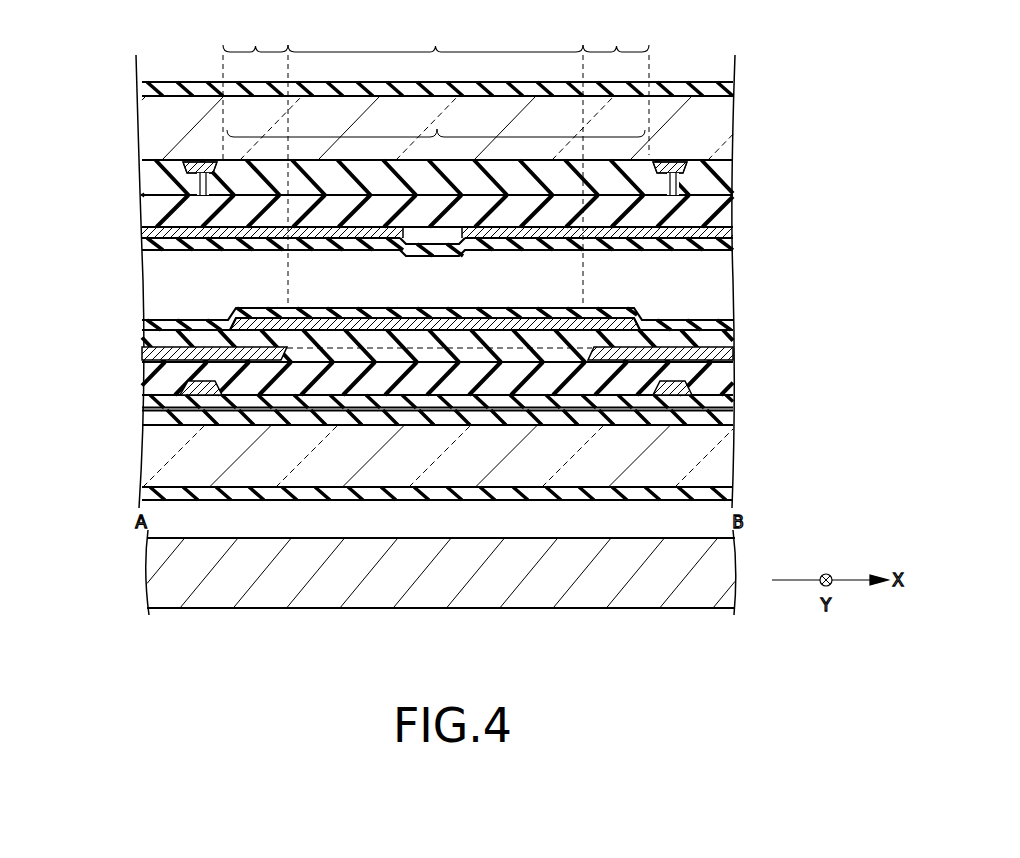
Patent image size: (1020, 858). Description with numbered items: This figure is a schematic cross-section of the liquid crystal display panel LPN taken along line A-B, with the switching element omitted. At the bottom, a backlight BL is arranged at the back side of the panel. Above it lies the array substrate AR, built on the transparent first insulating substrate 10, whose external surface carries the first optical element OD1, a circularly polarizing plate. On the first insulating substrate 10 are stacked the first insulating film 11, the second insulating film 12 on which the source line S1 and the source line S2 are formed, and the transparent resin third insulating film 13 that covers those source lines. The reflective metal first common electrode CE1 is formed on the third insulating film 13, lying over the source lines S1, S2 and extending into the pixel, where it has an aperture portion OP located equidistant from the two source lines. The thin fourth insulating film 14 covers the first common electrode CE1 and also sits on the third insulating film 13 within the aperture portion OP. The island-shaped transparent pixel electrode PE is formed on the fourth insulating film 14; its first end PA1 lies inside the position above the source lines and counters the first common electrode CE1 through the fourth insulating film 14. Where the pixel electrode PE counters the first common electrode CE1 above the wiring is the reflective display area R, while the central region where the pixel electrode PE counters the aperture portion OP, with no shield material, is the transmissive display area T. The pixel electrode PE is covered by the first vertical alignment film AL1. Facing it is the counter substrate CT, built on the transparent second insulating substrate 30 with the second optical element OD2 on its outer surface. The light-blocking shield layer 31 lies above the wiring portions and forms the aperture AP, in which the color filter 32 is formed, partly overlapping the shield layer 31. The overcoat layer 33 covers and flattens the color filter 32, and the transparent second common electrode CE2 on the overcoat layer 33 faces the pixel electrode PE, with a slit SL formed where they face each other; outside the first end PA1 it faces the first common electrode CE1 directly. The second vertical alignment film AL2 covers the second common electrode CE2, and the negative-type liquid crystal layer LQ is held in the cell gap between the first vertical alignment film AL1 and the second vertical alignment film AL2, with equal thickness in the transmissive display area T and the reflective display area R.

The second optical element OD2 is at (713, 82).
The liquid crystal display panel LPN is at (746, 100).
The counter substrate CT is at (122, 130).
The second insulating substrate 30 is at (727, 121).
The shield layer 31 is at (713, 160).
The color filter 32 is at (728, 188).
The overcoat layer 33 is at (728, 216).
The second common electrode CE2 is at (142, 232).
The slit SL is at (437, 254).
The second vertical alignment film AL2 is at (706, 250).
The liquid crystal layer LQ is at (718, 291).
The first end of the pixel electrode PA1 is at (256, 309).
The aperture portion OP is at (366, 307).
The first vertical alignment film AL1 is at (716, 322).
The fourth insulating film 14 is at (726, 341).
The pixel electrode PE is at (505, 332).
The first common electrode CE1 is at (268, 358).
The third insulating film 13 is at (727, 382).
The source line S1 is at (190, 384).
The source line S2 is at (672, 396).
The second insulating film 12 is at (728, 403).
The first insulating film 11 is at (730, 418).
The first insulating substrate 10 is at (722, 467).
The first optical element OD1 is at (734, 495).
The array substrate AR is at (122, 455).
The backlight BL is at (150, 582).
The aperture AP is at (436, 121).
The reflective display area R is at (436, 37).
The transmissive display area T is at (435, 37).